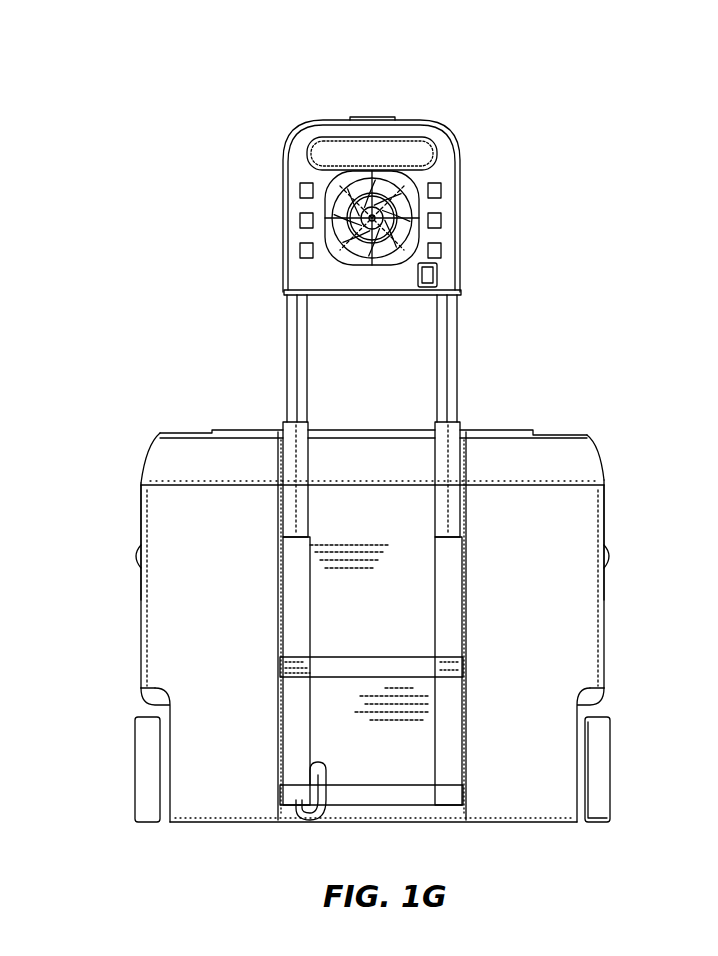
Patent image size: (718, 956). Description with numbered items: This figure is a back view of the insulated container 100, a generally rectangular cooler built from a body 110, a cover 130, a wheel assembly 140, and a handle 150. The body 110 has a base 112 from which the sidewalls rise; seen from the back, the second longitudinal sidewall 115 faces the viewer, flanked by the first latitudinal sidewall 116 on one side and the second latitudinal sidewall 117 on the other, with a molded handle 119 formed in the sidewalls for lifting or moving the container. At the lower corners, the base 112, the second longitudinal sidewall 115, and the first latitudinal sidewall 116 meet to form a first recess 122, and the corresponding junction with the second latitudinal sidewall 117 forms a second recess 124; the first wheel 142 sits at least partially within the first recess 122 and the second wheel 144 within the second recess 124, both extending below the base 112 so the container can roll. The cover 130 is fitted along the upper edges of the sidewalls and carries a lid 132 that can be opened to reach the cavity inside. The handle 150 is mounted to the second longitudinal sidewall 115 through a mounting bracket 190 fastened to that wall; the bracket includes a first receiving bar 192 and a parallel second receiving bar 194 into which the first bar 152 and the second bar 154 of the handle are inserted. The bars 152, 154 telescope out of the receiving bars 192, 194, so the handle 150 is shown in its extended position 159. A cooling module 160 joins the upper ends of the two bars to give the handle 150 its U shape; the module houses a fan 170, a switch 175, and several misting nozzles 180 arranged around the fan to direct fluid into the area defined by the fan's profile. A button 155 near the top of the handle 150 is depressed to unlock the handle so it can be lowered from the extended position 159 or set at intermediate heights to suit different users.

The insulated container 100 is at (148, 103).
The body 110 is at (382, 671).
The base 112 is at (507, 823).
The second longitudinal sidewall 115 is at (578, 663).
The first latitudinal sidewall 116 is at (140, 515).
The second latitudinal sidewall 117 is at (606, 515).
The molded handle 119 is at (134, 562).
The first recess 122 is at (160, 700).
The second recess 124 is at (588, 703).
The cover 130 is at (405, 431).
The lid 132 is at (497, 430).
The wheel assembly 140 is at (611, 745).
The first wheel 142 is at (135, 745).
The second wheel 144 is at (611, 787).
The handle 150 is at (374, 206).
The first bar 152 is at (285, 357).
The second bar 154 is at (458, 355).
The button 155 is at (376, 117).
The extended position 159 is at (270, 135).
The cooling module 160 is at (305, 273).
The fan 170 is at (375, 260).
The switch 175 is at (437, 282).
The misting nozzles 180 is at (297, 226).
The mounting bracket 190 is at (376, 682).
The first receiving bar 192 is at (298, 733).
The second receiving bar 194 is at (450, 730).